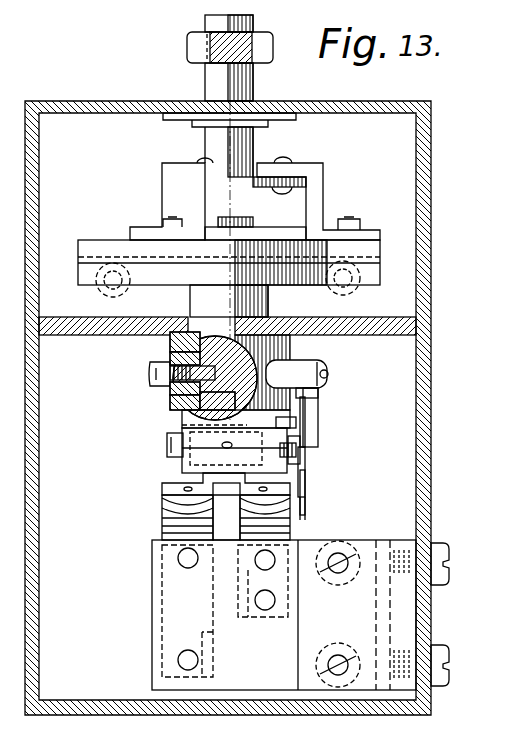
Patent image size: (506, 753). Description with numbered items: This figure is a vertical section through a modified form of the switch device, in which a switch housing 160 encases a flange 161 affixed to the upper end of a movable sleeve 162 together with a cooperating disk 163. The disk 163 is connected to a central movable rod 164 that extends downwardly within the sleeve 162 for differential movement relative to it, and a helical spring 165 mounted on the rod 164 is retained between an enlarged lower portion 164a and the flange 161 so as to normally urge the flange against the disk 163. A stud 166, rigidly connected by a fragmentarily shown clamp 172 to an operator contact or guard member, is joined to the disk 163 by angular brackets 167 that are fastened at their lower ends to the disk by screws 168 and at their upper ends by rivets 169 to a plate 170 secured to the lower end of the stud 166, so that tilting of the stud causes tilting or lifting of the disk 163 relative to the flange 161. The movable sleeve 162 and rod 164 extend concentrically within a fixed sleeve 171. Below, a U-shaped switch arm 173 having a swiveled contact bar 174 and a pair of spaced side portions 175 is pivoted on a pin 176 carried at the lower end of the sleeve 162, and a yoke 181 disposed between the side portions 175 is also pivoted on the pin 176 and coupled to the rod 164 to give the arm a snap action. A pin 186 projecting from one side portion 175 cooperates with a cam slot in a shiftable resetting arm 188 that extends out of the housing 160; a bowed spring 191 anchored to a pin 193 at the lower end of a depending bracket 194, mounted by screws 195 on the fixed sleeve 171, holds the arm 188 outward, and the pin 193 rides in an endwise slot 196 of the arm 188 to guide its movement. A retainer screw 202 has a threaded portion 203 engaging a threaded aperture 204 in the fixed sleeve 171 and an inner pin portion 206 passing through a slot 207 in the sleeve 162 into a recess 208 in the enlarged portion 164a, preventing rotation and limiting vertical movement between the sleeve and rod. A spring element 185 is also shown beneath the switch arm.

The switch housing 160 is at (431, 184).
The flange 161 is at (380, 268).
The movable sleeve 162 is at (186, 400).
The cooperating disk 163 is at (378, 246).
The movable rod 164 is at (215, 222).
The enlarged lower portion 164a is at (318, 392).
The helical spring 165 is at (186, 318).
The stud 166 is at (250, 84).
The angular brackets 167 is at (165, 182).
The screws 168 is at (355, 222).
The rivets 169 is at (282, 160).
The plate 170 is at (260, 195).
The fixed sleeve 171 is at (170, 357).
The clamp 172 is at (188, 42).
The U-shaped switch arm 173 is at (185, 481).
The contact bar 174 is at (305, 505).
The side portions 175 is at (305, 445).
The pin 176 is at (167, 447).
The yoke 181 is at (182, 465).
The spring 185 is at (170, 521).
The pin 186 is at (297, 422).
The resetting arm 188 is at (305, 490).
The bowed spring 191 is at (305, 476).
The pin 193 is at (297, 450).
The depending bracket 194 is at (312, 404).
The screws 195 is at (328, 374).
The endwise slot 196 is at (300, 462).
The retainer screw 202 is at (143, 386).
The threaded portion 203 is at (170, 388).
The threaded aperture 204 is at (172, 398).
The inner pin portion 206 is at (290, 348).
The slot 207 is at (170, 347).
The recess 208 is at (296, 374).